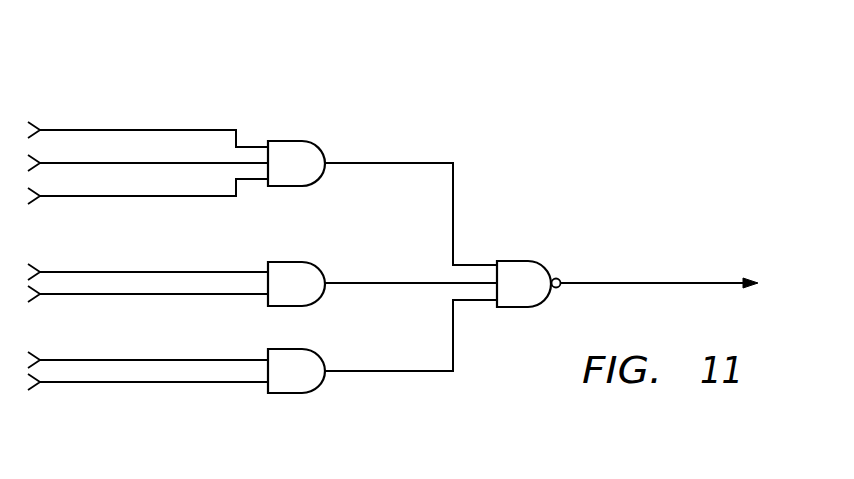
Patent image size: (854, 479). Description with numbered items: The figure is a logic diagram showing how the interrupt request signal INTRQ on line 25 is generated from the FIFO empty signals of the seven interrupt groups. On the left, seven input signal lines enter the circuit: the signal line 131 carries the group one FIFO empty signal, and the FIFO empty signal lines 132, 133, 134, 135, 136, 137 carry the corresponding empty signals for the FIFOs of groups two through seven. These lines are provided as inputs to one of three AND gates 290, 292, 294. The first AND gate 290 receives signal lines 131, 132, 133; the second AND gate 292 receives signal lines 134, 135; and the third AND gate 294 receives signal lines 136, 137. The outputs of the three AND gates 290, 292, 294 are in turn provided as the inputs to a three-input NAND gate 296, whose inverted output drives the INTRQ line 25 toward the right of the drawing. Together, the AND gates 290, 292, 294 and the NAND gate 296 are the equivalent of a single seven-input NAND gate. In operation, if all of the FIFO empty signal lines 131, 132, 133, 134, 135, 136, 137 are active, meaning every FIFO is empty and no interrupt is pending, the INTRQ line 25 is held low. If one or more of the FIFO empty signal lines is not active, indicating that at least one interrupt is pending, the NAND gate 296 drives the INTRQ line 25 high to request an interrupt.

The group 1 FIFO empty signal line 131 is at (105, 130).
The FIFO empty signal line 132 is at (176, 163).
The FIFO empty signal line 133 is at (204, 197).
The FIFO empty signal line 134 is at (106, 272).
The FIFO empty signal line 135 is at (135, 295).
The FIFO empty signal line 136 is at (105, 360).
The FIFO empty signal line 137 is at (127, 383).
The AND gate 290 is at (292, 141).
The AND gate 292 is at (292, 262).
The AND gate 294 is at (292, 394).
The 3-input NAND gate 296 is at (518, 261).
The INTRQ line 25 is at (692, 283).